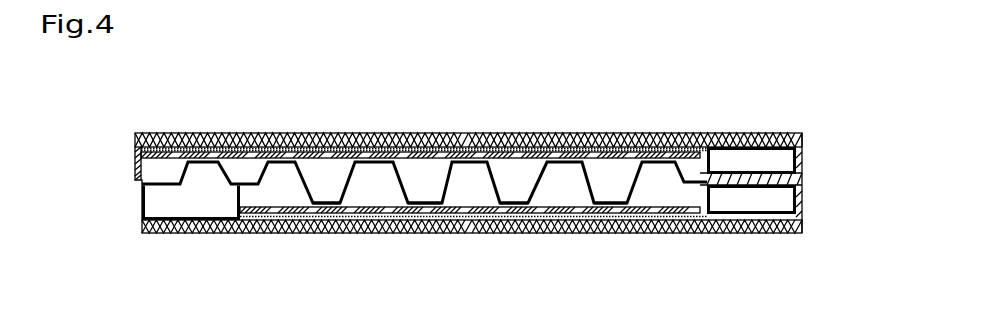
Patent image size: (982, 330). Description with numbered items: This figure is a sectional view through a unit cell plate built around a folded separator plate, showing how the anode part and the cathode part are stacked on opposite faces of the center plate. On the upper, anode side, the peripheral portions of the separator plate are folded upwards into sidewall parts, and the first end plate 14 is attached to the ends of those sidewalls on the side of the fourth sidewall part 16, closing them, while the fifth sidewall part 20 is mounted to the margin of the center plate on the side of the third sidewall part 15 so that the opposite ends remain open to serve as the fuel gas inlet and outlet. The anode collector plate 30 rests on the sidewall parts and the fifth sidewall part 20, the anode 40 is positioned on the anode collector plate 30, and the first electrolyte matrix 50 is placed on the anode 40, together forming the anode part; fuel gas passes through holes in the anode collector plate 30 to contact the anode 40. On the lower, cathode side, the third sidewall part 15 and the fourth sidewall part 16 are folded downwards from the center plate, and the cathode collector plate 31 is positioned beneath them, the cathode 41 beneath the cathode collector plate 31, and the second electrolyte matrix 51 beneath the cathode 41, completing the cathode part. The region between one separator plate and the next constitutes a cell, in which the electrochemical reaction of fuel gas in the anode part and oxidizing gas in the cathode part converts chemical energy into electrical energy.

The first end plate 14 is at (133, 166).
The third sidewall part 15 is at (802, 197).
The fourth sidewall part 16 is at (140, 204).
The fifth sidewall part 20 is at (802, 155).
The anode collector plate 30 is at (408, 132).
The cathode collector plate 31 is at (372, 234).
The anode 40 is at (513, 132).
The cathode 41 is at (433, 234).
The first electrolyte matrix 50 is at (693, 132).
The second electrolyte matrix 51 is at (567, 234).